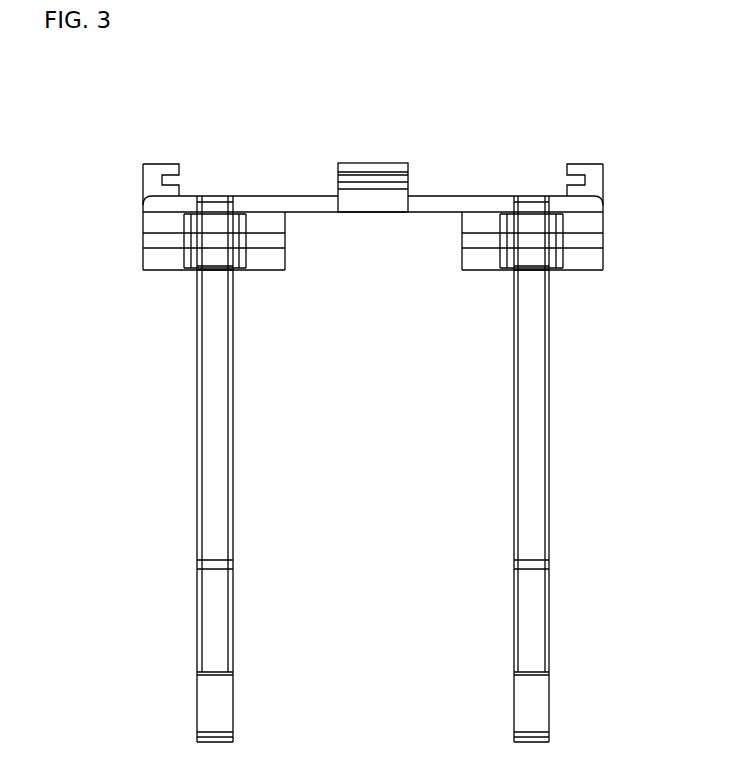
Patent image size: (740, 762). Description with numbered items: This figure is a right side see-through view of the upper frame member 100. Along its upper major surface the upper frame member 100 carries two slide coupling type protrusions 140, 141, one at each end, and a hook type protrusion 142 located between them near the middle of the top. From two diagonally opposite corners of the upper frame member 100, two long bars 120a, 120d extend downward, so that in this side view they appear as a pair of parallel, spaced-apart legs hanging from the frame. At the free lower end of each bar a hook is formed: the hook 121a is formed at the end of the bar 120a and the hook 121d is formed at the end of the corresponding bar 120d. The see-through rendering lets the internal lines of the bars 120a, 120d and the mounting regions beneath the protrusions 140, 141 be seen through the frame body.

The upper frame member 100 is at (79, 102).
The slide coupling type protrusion 140 is at (588, 163).
The slide coupling type protrusion 141 is at (163, 163).
The hook type protrusion 142 is at (382, 163).
The bar 120a is at (550, 340).
The bar 120d is at (233, 378).
The hook 121a is at (530, 730).
The hook 121d is at (220, 730).